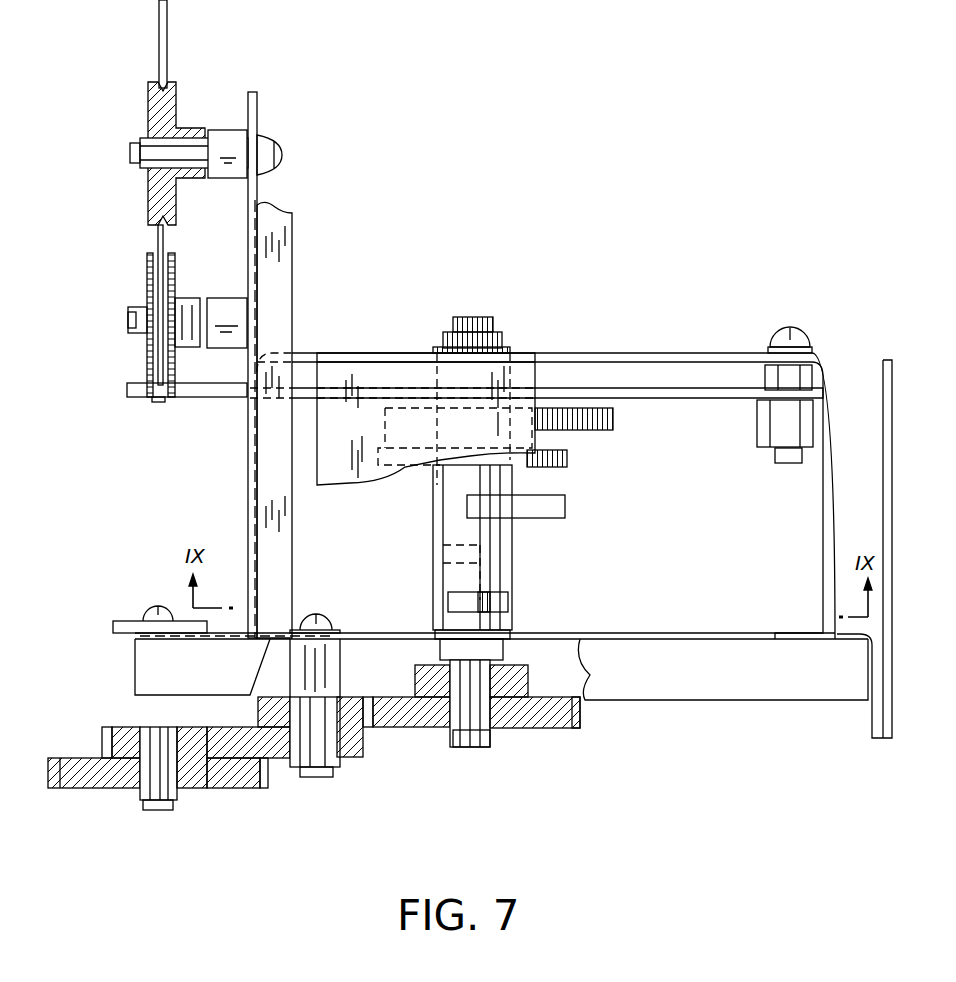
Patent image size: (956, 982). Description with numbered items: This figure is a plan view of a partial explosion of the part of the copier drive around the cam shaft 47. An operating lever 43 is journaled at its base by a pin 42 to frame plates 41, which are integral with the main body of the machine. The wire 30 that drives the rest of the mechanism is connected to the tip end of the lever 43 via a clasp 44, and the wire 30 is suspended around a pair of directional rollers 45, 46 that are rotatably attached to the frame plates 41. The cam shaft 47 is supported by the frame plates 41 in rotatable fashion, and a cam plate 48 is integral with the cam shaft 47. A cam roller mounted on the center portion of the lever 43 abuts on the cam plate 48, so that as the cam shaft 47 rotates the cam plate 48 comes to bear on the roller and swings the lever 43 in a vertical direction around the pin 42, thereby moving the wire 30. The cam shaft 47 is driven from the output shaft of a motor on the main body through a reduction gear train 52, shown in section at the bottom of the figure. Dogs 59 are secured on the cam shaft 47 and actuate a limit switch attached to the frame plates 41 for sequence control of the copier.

The wire 30 is at (168, 33).
The directional roller 46 is at (157, 113).
The directional roller 45 is at (158, 292).
The clasp 44 is at (162, 402).
The frame plates 41 is at (352, 372).
The operating lever 43 is at (640, 398).
The pin 42 is at (802, 380).
The cam plate 48 is at (602, 428).
The dogs 59 is at (564, 466).
The cam shaft 47 is at (443, 525).
The reduction gear train 52 is at (370, 773).